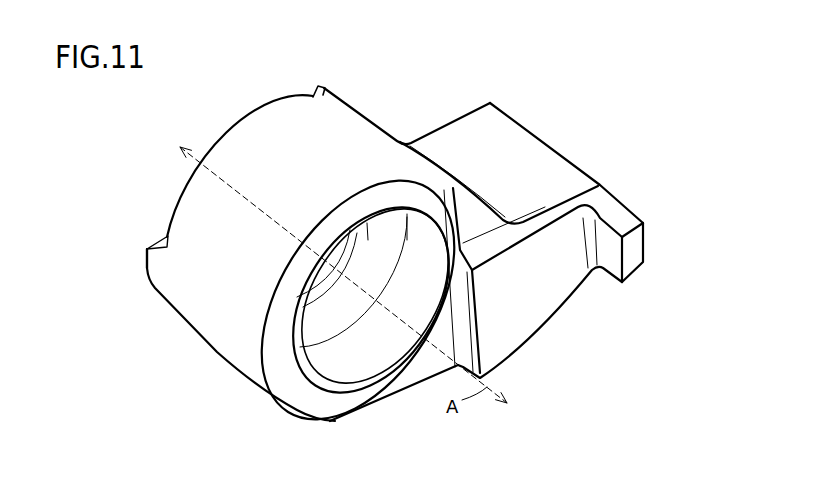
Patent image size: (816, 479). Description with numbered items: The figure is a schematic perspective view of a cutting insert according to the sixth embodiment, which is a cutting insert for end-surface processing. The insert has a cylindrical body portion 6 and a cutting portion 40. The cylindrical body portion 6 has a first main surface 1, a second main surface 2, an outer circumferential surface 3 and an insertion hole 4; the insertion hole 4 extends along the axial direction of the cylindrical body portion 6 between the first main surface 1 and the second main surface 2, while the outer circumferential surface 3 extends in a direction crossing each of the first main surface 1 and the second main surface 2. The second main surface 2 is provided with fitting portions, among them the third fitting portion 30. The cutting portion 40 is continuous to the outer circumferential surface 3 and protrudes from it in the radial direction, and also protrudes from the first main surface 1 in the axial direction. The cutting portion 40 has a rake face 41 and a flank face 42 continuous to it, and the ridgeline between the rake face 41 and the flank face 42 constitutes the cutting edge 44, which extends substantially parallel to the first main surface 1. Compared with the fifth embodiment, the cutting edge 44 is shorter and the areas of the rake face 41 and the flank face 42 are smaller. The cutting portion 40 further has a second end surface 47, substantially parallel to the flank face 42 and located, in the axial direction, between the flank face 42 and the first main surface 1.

The first main surface 1 is at (287, 294).
The second main surface 2 is at (234, 134).
The outer circumferential surface 3 is at (212, 190).
The insertion hole 4 is at (341, 371).
The cylindrical body portion 6 is at (371, 269).
The third fitting portion 30 is at (152, 262).
The cutting portion 40 is at (604, 211).
The rake face 41 is at (617, 217).
The flank face 42 is at (629, 257).
The cutting edge 44 is at (630, 236).
The second end surface 47 is at (548, 290).